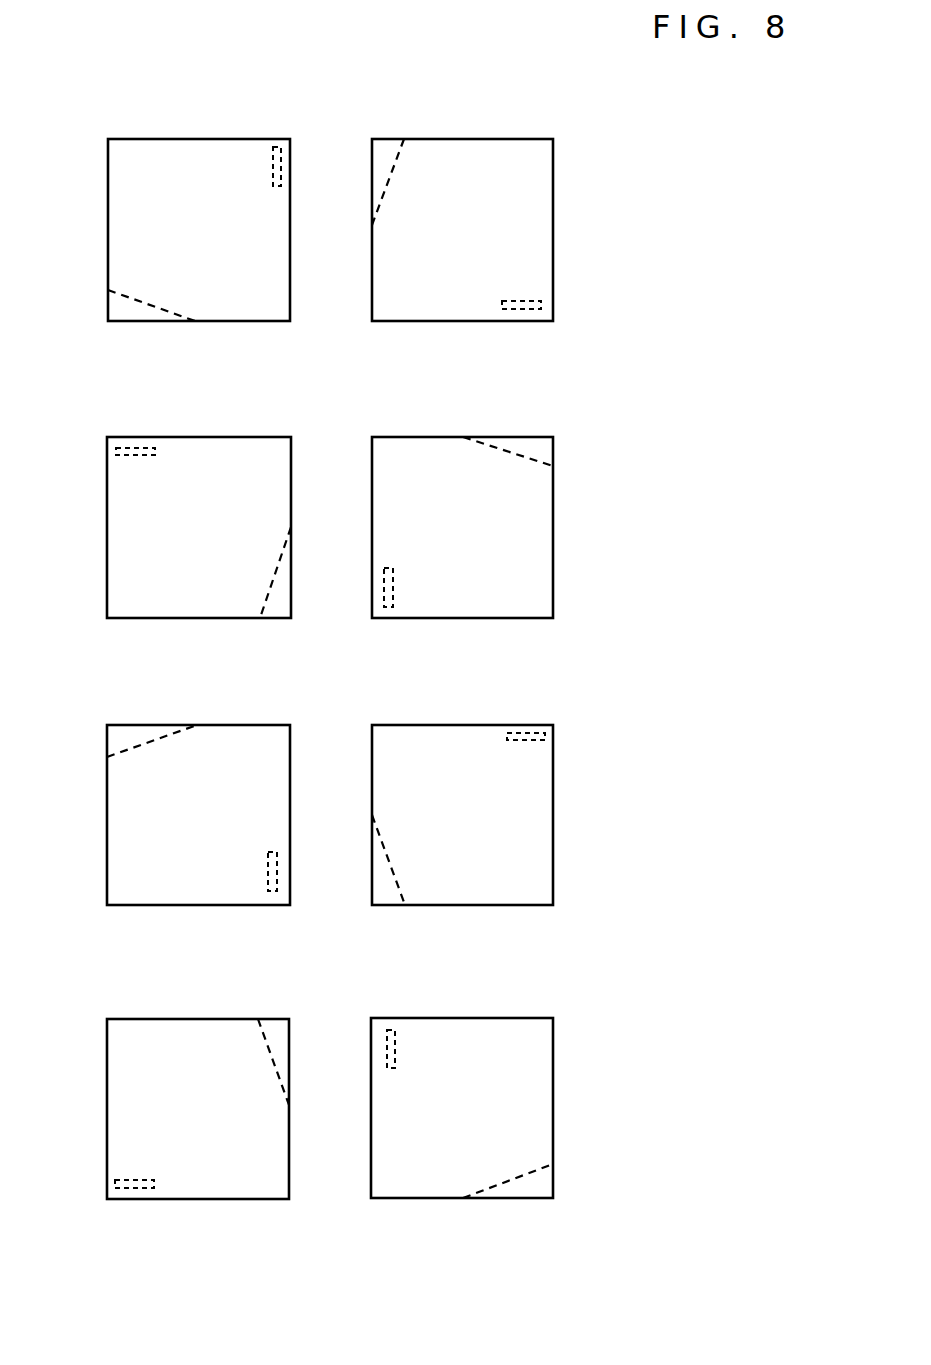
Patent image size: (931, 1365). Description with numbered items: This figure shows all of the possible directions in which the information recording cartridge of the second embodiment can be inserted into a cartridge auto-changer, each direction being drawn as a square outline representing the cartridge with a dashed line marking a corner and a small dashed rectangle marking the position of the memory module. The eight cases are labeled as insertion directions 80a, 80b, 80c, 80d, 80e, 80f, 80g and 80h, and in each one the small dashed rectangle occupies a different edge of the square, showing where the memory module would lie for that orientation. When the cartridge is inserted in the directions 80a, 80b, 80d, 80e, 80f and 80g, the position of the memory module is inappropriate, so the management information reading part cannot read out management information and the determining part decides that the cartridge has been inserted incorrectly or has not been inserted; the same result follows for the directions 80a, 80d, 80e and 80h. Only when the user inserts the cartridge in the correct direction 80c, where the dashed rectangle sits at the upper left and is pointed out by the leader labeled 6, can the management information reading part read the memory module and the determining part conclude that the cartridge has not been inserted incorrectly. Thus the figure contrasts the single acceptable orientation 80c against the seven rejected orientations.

The insertion direction 80a is at (199, 213).
The insertion direction 80b is at (462, 213).
The correct insertion direction 80c is at (199, 508).
The insertion direction 80d is at (462, 508).
The insertion direction 80e is at (198, 796).
The insertion direction 80f is at (462, 796).
The insertion direction 80g is at (198, 1088).
The insertion direction 80h is at (462, 1088).
The light source image 6 is at (143, 455).